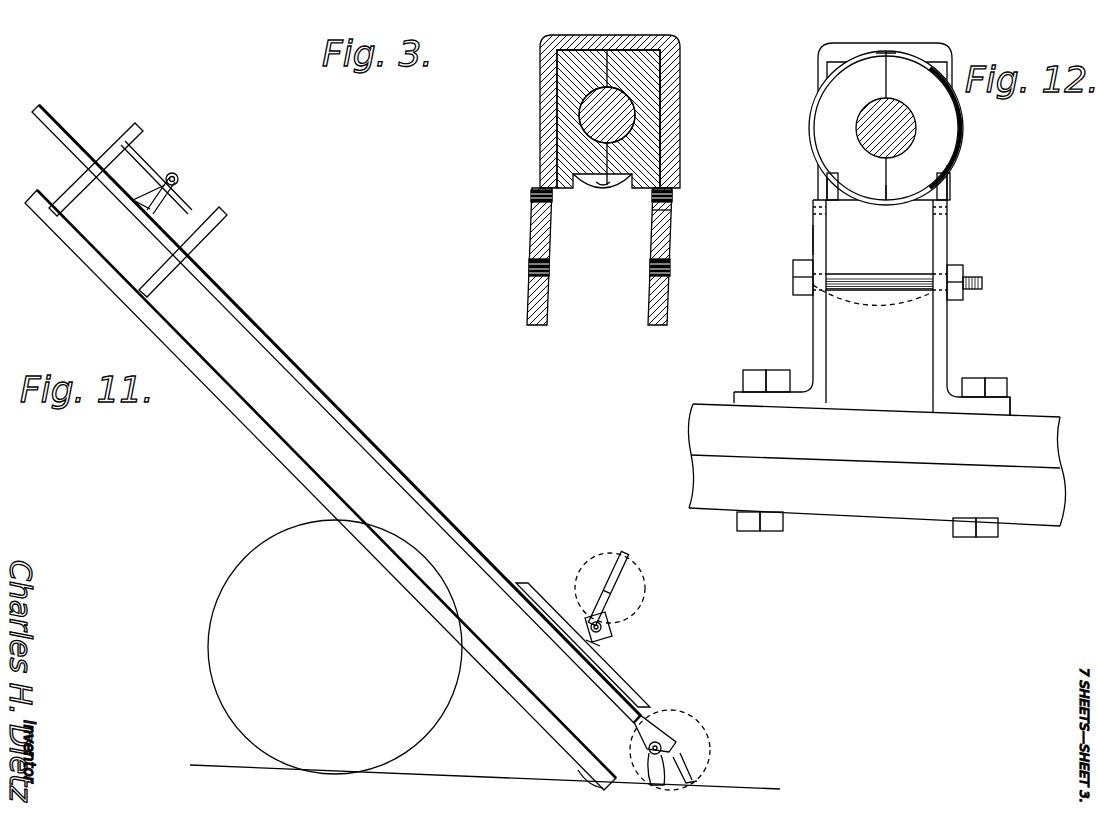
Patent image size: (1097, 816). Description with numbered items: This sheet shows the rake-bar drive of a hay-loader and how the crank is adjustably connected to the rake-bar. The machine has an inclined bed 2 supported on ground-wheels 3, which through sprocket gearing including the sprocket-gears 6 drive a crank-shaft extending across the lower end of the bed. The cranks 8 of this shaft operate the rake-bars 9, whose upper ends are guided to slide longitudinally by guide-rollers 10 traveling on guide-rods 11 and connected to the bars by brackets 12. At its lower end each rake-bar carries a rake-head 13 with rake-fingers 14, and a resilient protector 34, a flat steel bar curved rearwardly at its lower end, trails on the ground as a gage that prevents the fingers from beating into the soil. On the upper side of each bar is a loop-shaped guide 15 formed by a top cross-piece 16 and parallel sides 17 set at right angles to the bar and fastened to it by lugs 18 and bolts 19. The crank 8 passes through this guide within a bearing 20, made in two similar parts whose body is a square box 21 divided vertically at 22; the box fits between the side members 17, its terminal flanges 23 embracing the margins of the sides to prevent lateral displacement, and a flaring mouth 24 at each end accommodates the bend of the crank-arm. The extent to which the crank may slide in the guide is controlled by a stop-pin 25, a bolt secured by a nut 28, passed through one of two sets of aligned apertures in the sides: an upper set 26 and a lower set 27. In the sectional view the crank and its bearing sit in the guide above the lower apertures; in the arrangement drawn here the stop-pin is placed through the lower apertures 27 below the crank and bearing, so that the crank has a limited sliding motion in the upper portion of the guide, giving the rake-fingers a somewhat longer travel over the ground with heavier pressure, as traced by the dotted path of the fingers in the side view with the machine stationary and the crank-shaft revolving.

In FIG. 11, the inclined bed 2 is at (132, 312).
In FIG. 11, the ground-wheels 3 is at (250, 552).
In FIG. 11, the sprocket-gears 6 is at (598, 622).
In FIG. 3, the crank 8 is at (618, 105).
In FIG. 12, the crank 8 is at (860, 118).
In FIG. 11, the crank 8 is at (616, 590).
In FIG. 12, the rake-bar 9 is at (893, 512).
In FIG. 11, the rake-bar 9 is at (427, 508).
In FIG. 11, the guide-rollers 10 is at (178, 177).
In FIG. 11, the guide-rods 11 is at (185, 140).
In FIG. 11, the brackets 12 is at (152, 208).
In FIG. 11, the rake-head 13 is at (644, 741).
In FIG. 11, the rake-fingers 14 is at (656, 772).
In FIG. 3, the guide 15 is at (669, 236).
In FIG. 12, the guide 15 is at (820, 240).
In FIG. 11, the guide 15 is at (603, 641).
In FIG. 3, the top cross-piece 16 is at (580, 36).
In FIG. 12, the top cross-piece 16 is at (870, 43).
In FIG. 3, the parallel sides 17 is at (530, 298).
In FIG. 12, the parallel sides 17 is at (808, 326).
In FIG. 12, the lugs 18 is at (1010, 400).
In FIG. 12, the bolts 19 is at (771, 381).
In FIG. 3, the bearing 20 is at (566, 140).
In FIG. 12, the bearing 20 is at (936, 140).
In FIG. 11, the bearing 20 is at (606, 631).
In FIG. 3, the square box 21 is at (640, 152).
In FIG. 12, the square box 21 is at (913, 194).
In FIG. 3, the division 22 is at (592, 180).
In FIG. 12, the division 22 is at (877, 196).
In FIG. 12, the terminal flanges 23 is at (827, 181).
In FIG. 3, the flaring mouth 24 is at (622, 181).
In FIG. 12, the flaring mouth 24 is at (822, 128).
In FIG. 12, the stop-pin 25 is at (884, 280).
In FIG. 11, the stop-pin 25 is at (578, 618).
In FIG. 3, the upper apertures 26 is at (534, 195).
In FIG. 12, the upper apertures 26 is at (823, 207).
In FIG. 3, the lower apertures 27 is at (529, 270).
In FIG. 12, the lower apertures 27 is at (818, 292).
In FIG. 12, the nut 28 is at (956, 270).
In FIG. 11, the protector 34 is at (690, 776).